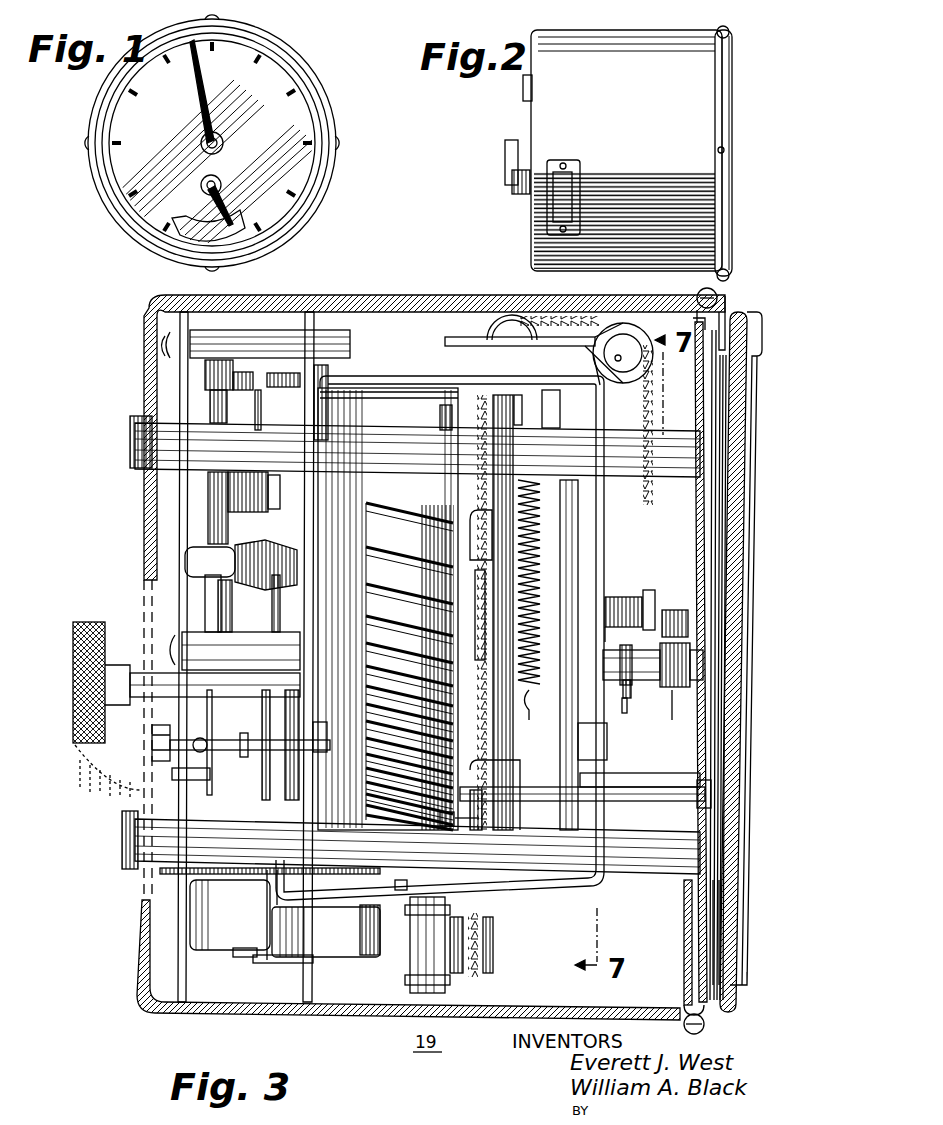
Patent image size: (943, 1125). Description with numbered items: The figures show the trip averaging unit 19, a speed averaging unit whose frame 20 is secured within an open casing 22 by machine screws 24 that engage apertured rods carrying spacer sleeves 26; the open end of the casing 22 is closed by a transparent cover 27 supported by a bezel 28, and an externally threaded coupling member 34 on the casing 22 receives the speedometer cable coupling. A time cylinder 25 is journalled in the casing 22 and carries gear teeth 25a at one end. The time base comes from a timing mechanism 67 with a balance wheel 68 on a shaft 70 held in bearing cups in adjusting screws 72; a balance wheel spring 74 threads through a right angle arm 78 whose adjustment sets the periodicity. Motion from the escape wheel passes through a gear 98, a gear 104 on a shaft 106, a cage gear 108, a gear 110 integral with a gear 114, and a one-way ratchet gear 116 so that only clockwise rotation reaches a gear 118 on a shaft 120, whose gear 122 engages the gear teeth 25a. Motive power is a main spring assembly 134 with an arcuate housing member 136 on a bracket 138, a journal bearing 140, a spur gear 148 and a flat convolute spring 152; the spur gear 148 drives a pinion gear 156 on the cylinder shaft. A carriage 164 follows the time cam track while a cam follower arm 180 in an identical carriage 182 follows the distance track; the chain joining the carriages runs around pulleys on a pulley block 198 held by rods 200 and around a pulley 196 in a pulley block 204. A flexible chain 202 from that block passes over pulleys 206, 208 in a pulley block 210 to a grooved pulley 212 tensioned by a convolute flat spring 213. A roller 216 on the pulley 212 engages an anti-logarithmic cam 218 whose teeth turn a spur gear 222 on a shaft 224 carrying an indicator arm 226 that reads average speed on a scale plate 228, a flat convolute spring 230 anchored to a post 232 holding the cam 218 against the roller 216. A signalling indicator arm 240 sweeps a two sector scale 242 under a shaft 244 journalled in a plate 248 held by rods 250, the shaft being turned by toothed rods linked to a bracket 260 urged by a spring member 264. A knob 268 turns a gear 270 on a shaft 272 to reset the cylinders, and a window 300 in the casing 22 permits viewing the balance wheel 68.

In FIG. 1, the trip averaging unit 19 is at (322, 98).
In FIG. 2, the trip averaging unit 19 is at (754, 168).
In FIG. 3, the frame 20 is at (315, 310).
In FIG. 2, the casing 22 is at (650, 15).
In FIG. 3, the casing 22 is at (350, 298).
In FIG. 2, the machine screws 24 is at (520, 85).
In FIG. 3, the machine screws 24 is at (130, 440).
In FIG. 3, the time cylinder 25 is at (440, 487).
In FIG. 3, the gear teeth 25a is at (425, 405).
In FIG. 3, the spacer sleeves 26 is at (636, 872).
In FIG. 3, the transparent cover 27 is at (705, 405).
In FIG. 1, the bezel 28 is at (100, 196).
In FIG. 3, the bezel 28 is at (715, 1018).
In FIG. 2, the coupling member 34 is at (510, 192).
In FIG. 3, the coupling member 34 is at (78, 776).
In FIG. 3, the timing mechanism 67 is at (204, 603).
In FIG. 3, the balance wheel 68 is at (270, 780).
In FIG. 3, the shaft 70 is at (252, 752).
In FIG. 3, the adjusting screws 72 is at (150, 738).
In FIG. 3, the balance wheel spring 74 is at (212, 785).
In FIG. 3, the right angle arm 78 is at (185, 775).
In FIG. 3, the gear 98 is at (222, 604).
In FIG. 3, the gear 104 is at (250, 540).
In FIG. 3, the shaft 106 is at (200, 562).
In FIG. 3, the cage gear 108 is at (238, 618).
In FIG. 3, the gear 110 is at (262, 415).
In FIG. 3, the gear 114 is at (215, 530).
In FIG. 3, the one-way ratchet gear 116 is at (215, 415).
In FIG. 3, the gear 118 is at (218, 358).
In FIG. 3, the shaft 120 is at (282, 370).
In FIG. 3, the gear 122 is at (330, 365).
In FIG. 3, the main spring assembly 134 is at (193, 965).
In FIG. 3, the housing member 136 is at (360, 958).
In FIG. 3, the bracket 138 is at (240, 957).
In FIG. 3, the journal bearing 140 is at (268, 963).
In FIG. 3, the spur gear 148 is at (160, 873).
In FIG. 3, the flat convolute spring 152 is at (195, 890).
In FIG. 3, the pinion gear 156 is at (406, 888).
In FIG. 3, the carriage 164 is at (460, 405).
In FIG. 3, the cam follower arm 180 is at (462, 826).
In FIG. 3, the carriage 182 is at (478, 760).
In FIG. 3, the pulley 196 is at (478, 708).
In FIG. 3, the pulley block 198 is at (450, 975).
In FIG. 3, the rods 200 is at (423, 951).
In FIG. 3, the flexible chain 202 is at (600, 300).
In FIG. 3, the pulley block 204 is at (485, 600).
In FIG. 3, the pulley 206 is at (505, 332).
In FIG. 3, the pulley 208 is at (640, 325).
In FIG. 3, the pulley block 210 is at (432, 345).
In FIG. 3, the grooved pulley 212 is at (640, 560).
In FIG. 3, the convolute flat spring 213 is at (655, 600).
In FIG. 3, the roller 216 is at (690, 635).
In FIG. 3, the cam 218 is at (748, 432).
In FIG. 3, the spur gear 222 is at (690, 660).
In FIG. 3, the shaft 224 is at (635, 690).
In FIG. 1, the indicator arm 226 is at (198, 72).
In FIG. 3, the indicator arm 226 is at (727, 478).
In FIG. 1, the scale plate 228 is at (272, 66).
In FIG. 3, the scale plate 228 is at (690, 912).
In FIG. 3, the flat convolute spring 230 is at (628, 712).
In FIG. 3, the post 232 is at (685, 612).
In FIG. 1, the indicator arm 240 is at (227, 210).
In FIG. 3, the indicator arm 240 is at (720, 920).
In FIG. 1, the two sector scale 242 is at (190, 226).
In FIG. 3, the shaft 244 is at (665, 785).
In FIG. 3, the plate 248 is at (580, 775).
In FIG. 3, the rods 250 is at (600, 740).
In FIG. 3, the bracket 260 is at (525, 400).
In FIG. 3, the spring member 264 is at (535, 560).
In FIG. 2, the knob 268 is at (510, 138).
In FIG. 3, the knob 268 is at (73, 636).
In FIG. 3, the gear 270 is at (282, 610).
In FIG. 3, the shaft 272 is at (165, 673).
In FIG. 2, the window 300 is at (566, 192).